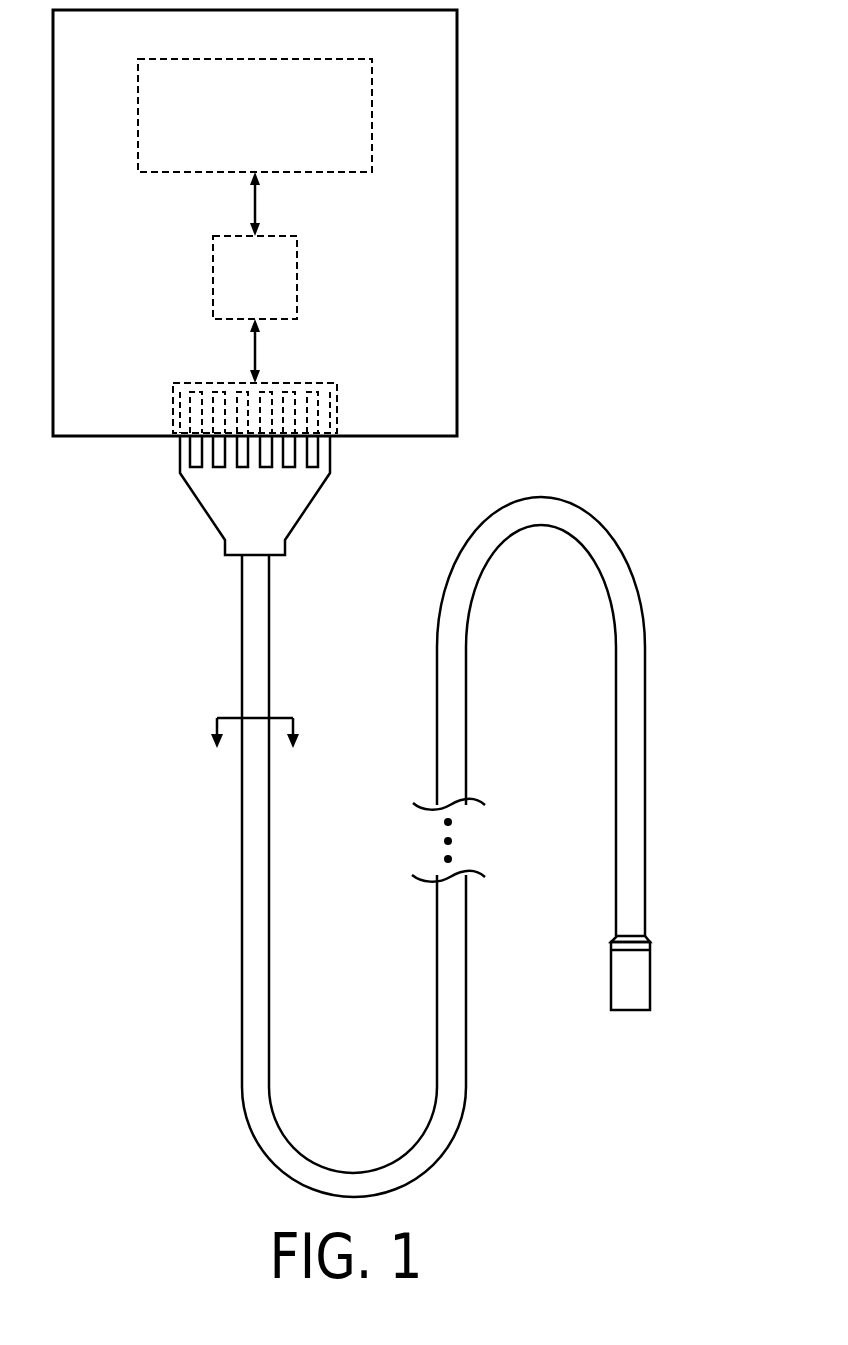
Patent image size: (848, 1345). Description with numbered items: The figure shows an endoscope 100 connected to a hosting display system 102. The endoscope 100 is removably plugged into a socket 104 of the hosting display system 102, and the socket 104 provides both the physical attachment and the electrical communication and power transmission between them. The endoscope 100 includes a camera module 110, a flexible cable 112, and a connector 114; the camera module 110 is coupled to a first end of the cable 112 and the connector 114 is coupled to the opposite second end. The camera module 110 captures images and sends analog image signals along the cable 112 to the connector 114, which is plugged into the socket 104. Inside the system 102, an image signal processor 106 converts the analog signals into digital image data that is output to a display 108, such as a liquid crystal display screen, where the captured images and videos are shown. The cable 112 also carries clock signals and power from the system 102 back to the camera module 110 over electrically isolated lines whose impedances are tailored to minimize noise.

The endoscope 100 is at (741, 517).
The hosting display system 102 is at (140, 335).
The socket 104 is at (310, 383).
The image signal processor 106 is at (275, 306).
The display 108 is at (274, 149).
The camera module 110 is at (631, 970).
The flexible cable 112 is at (258, 955).
The connector 114 is at (330, 463).